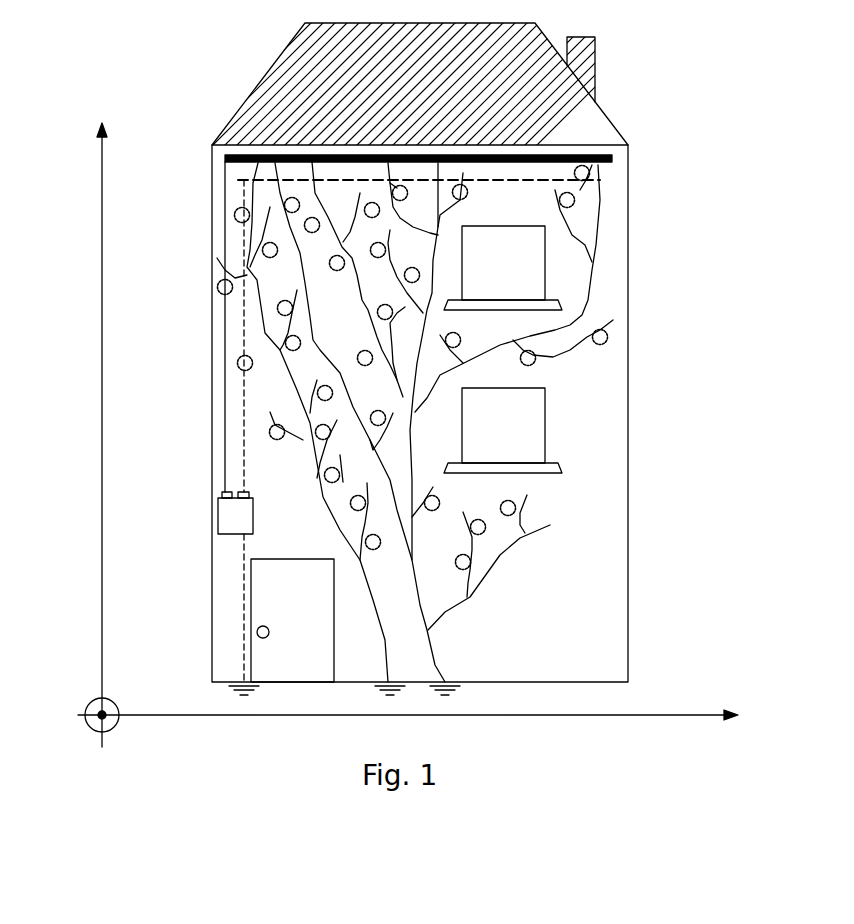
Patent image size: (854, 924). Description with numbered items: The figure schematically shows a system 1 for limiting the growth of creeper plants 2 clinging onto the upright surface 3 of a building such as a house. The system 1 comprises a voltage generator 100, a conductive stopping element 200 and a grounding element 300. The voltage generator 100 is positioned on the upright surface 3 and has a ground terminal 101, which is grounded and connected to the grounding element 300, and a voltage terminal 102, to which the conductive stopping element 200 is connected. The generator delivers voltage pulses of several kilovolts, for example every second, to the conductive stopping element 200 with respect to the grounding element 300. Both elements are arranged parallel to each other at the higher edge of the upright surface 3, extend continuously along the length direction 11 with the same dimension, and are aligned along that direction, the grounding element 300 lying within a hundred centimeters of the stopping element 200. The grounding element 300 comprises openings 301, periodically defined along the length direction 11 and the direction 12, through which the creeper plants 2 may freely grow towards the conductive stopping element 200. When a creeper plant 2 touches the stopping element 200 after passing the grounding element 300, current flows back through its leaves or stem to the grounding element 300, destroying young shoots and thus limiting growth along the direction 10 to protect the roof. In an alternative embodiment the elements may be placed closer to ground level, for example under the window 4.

The system 1 is at (196, 160).
The creeper plants 2 is at (446, 621).
The upright surface 3 is at (611, 500).
The window 4 is at (560, 431).
The direction 10 is at (76, 435).
The length direction 11 is at (706, 715).
The direction 12 is at (130, 692).
The voltage generator 100 is at (218, 517).
The ground terminal 101 is at (257, 485).
The voltage terminal 102 is at (213, 486).
The conductive stopping element 200 is at (620, 163).
The grounding element 300 is at (608, 188).
The openings 301 is at (546, 190).